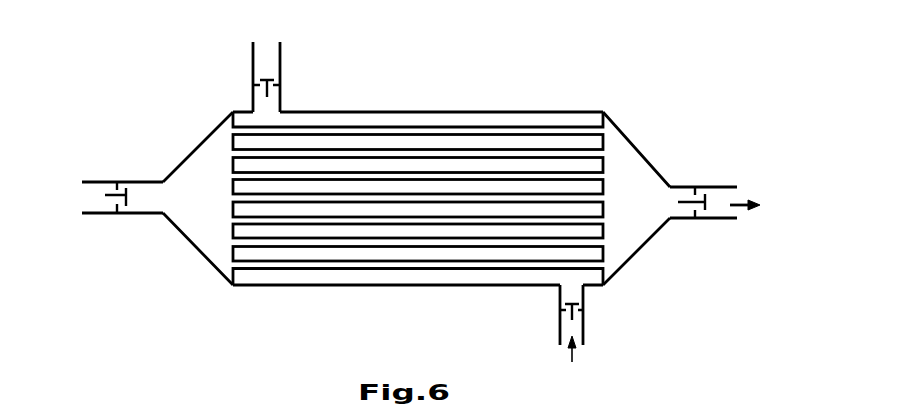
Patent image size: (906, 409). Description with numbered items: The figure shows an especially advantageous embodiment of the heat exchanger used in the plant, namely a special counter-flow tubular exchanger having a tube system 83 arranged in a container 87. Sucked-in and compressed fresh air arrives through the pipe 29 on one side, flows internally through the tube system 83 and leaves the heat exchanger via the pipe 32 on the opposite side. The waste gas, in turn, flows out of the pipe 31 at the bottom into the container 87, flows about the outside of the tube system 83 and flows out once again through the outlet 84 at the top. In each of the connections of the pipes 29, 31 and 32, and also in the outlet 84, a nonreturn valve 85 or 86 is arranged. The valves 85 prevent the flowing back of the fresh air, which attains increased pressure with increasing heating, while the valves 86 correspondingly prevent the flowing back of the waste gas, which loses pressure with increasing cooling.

The pipe 29 is at (83, 202).
The pipe 31 is at (560, 332).
The pipe 32 is at (733, 188).
The tube system 83 is at (426, 133).
The outlet 84 is at (280, 50).
The nonreturn valve 85 is at (118, 203).
The nonreturn valve 86 is at (280, 88).
The container 87 is at (545, 113).